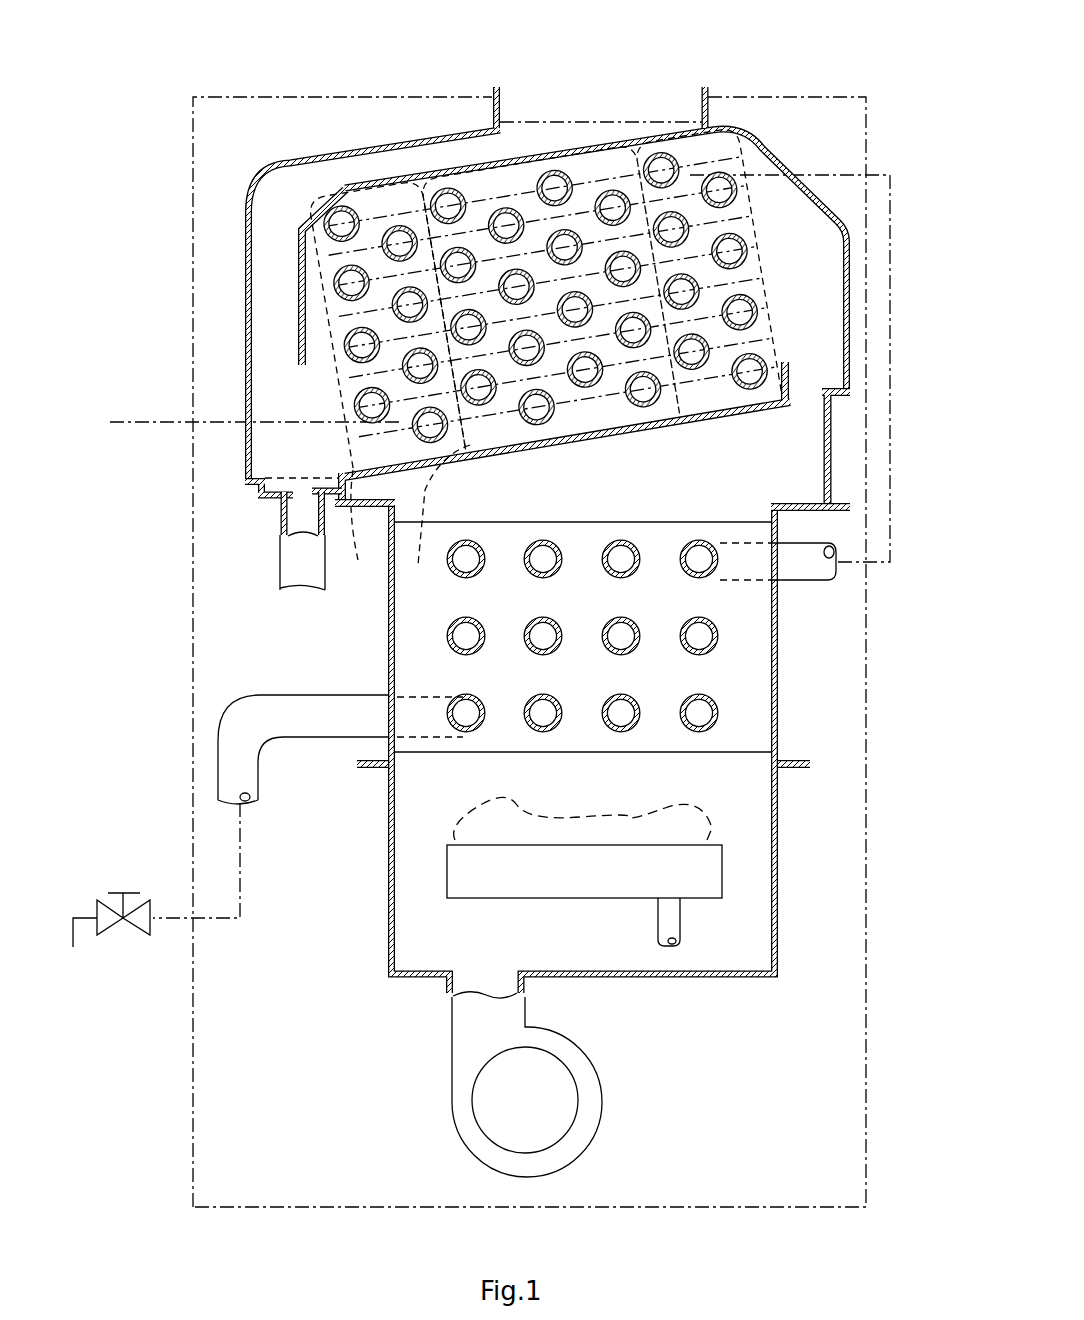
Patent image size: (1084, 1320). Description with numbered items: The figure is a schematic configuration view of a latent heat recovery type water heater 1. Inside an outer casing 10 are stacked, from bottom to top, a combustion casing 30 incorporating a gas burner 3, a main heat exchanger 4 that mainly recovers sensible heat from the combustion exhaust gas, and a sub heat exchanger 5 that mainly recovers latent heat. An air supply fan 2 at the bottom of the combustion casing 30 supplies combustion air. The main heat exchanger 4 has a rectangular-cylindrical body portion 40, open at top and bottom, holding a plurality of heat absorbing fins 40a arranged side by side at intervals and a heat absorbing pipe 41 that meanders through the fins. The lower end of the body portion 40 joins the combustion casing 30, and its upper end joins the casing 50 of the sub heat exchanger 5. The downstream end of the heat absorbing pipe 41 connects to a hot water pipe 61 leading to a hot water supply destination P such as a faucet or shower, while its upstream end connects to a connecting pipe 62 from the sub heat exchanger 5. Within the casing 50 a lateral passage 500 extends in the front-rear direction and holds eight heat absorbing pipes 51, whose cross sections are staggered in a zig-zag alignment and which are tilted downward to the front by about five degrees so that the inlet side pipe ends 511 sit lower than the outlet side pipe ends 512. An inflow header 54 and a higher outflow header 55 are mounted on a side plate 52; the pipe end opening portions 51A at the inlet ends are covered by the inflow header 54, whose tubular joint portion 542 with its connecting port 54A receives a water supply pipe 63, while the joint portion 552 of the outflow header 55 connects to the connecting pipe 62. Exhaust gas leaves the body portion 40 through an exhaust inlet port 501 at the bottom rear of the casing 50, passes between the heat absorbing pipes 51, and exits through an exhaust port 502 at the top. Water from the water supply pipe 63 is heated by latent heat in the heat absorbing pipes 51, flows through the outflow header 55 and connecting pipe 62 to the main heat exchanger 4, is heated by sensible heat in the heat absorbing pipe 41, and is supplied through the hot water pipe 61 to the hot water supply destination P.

The latent heat recovery type water heater 1 is at (150, 130).
The air supply fan 2 is at (603, 1133).
The gas burner 3 is at (720, 875).
The main heat exchanger 4 is at (813, 667).
The sub heat exchanger 5 is at (815, 150).
The outer casing 10 is at (822, 78).
The combustion casing 30 is at (780, 910).
The body portion 40 is at (779, 698).
The heat absorbing fins 40a is at (500, 740).
The heat absorbing pipe 41 is at (720, 634).
The casing 50 is at (735, 150).
The lateral passage 500 is at (512, 177).
The exhaust inlet port 501 is at (803, 410).
The exhaust port 502 is at (583, 90).
The heat absorbing pipes 51 is at (436, 188).
The pipe end opening portions 51A is at (452, 445).
The inlet side pipe ends 511 is at (346, 352).
The outlet side pipe ends 512 is at (752, 250).
The side plate 52 is at (603, 158).
The inflow header 54 is at (295, 285).
The connecting port 54A is at (432, 523).
The joint portion 542 is at (331, 530).
The outflow header 55 is at (775, 332).
The joint portion 552 is at (714, 122).
The hot water pipe 61 is at (242, 877).
The connecting pipe 62 is at (892, 525).
The water supply pipe 63 is at (162, 424).
The hot water supply destination P is at (120, 957).